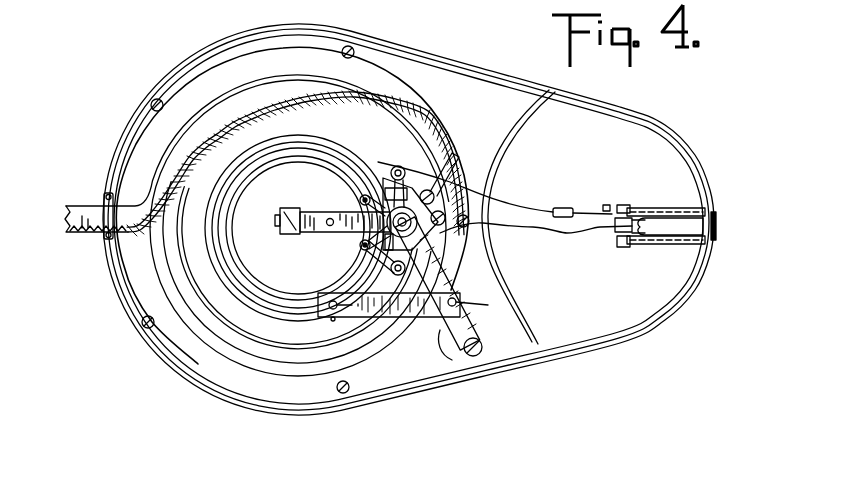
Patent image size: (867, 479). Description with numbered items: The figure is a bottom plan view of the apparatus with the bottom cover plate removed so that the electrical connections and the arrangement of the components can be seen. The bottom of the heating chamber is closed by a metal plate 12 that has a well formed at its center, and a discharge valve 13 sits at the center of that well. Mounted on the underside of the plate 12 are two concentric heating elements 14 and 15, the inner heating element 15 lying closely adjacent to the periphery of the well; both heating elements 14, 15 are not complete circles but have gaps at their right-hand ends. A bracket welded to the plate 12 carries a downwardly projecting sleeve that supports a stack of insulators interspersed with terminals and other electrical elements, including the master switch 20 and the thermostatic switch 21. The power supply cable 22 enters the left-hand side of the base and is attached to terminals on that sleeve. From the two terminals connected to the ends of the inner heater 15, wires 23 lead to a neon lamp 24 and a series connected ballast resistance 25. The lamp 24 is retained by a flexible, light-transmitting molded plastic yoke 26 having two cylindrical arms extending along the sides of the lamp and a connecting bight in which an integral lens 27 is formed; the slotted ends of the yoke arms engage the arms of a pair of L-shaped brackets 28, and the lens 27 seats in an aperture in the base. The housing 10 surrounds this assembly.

The housing 10 is at (195, 207).
The metal plate 12 is at (384, 171).
The discharge valve 13 is at (304, 275).
The heating element 14 is at (206, 302).
The inner heating element 15 is at (242, 280).
The master switch 20 is at (405, 264).
The thermostatic switch 21 is at (306, 212).
The power supply cable 22 is at (81, 234).
The wires 23 is at (500, 210).
The neon lamp 24 is at (665, 223).
The ballast resistance 25 is at (564, 208).
The yoke 26 is at (639, 242).
The lens 27 is at (717, 222).
The L-shaped brackets 28 is at (621, 247).